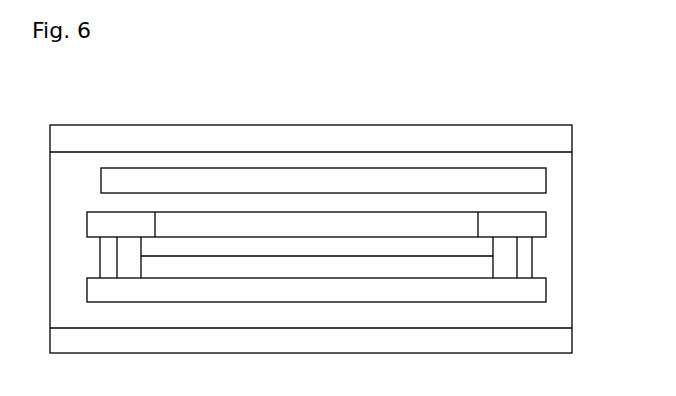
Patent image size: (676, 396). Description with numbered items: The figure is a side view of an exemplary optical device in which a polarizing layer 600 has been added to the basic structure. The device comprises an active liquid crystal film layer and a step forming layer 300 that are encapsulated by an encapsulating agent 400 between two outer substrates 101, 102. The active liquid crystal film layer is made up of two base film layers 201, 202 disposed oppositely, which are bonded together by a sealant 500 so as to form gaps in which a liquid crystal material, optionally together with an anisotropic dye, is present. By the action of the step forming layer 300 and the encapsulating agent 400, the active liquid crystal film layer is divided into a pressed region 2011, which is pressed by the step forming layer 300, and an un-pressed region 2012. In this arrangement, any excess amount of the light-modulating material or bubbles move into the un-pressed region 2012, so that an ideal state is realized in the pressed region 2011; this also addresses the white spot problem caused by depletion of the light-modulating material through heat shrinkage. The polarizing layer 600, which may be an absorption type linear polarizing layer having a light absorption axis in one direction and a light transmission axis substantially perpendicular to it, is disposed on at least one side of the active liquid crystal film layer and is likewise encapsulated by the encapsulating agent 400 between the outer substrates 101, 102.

The outer substrate 101 is at (311, 142).
The outer substrate 102 is at (311, 341).
The polarizing layer 600 is at (323, 180).
The step forming layer 300 is at (316, 224).
The base film layer 201 is at (317, 248).
The base film layer 202 is at (316, 290).
The pressed region 2011 is at (270, 266).
The un-pressed region 2012 is at (510, 262).
The encapsulating agent 400 is at (570, 231).
The sealant 500 is at (528, 278).